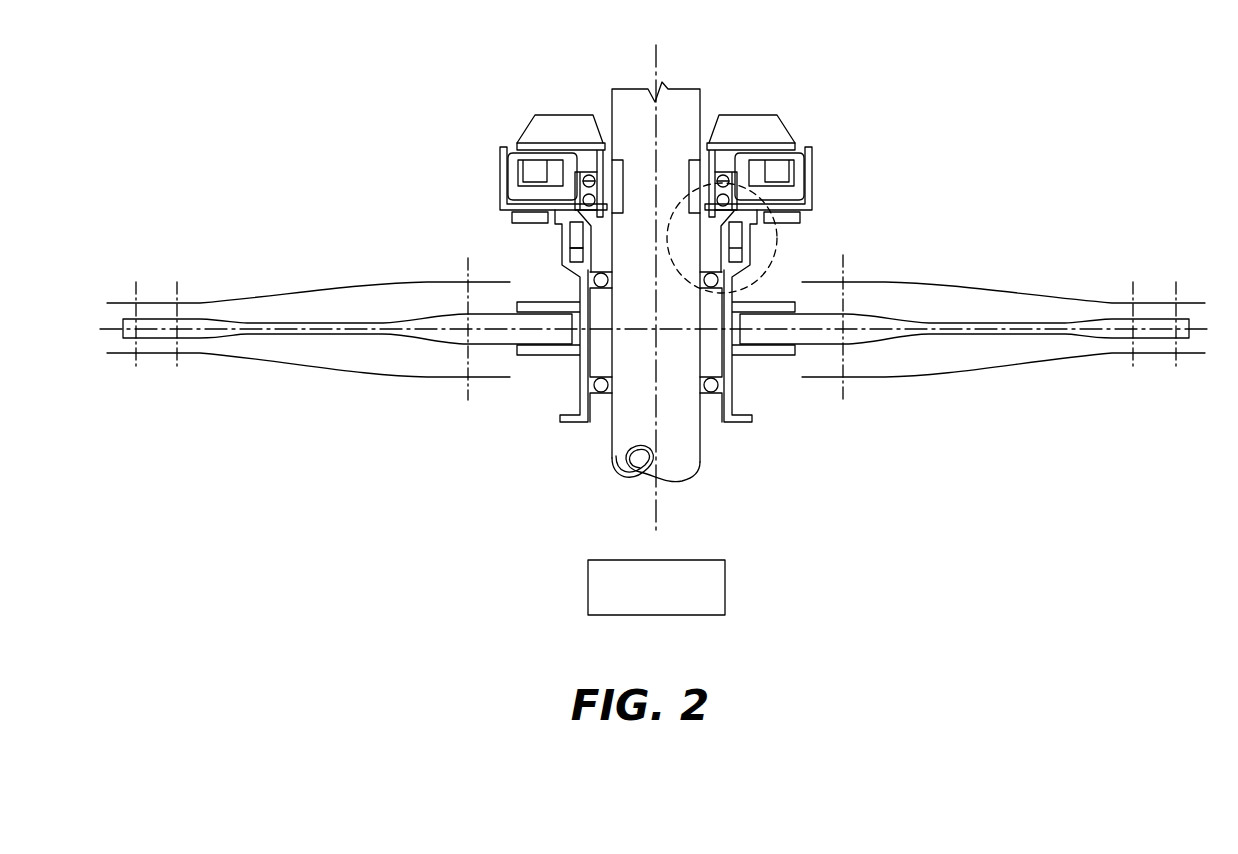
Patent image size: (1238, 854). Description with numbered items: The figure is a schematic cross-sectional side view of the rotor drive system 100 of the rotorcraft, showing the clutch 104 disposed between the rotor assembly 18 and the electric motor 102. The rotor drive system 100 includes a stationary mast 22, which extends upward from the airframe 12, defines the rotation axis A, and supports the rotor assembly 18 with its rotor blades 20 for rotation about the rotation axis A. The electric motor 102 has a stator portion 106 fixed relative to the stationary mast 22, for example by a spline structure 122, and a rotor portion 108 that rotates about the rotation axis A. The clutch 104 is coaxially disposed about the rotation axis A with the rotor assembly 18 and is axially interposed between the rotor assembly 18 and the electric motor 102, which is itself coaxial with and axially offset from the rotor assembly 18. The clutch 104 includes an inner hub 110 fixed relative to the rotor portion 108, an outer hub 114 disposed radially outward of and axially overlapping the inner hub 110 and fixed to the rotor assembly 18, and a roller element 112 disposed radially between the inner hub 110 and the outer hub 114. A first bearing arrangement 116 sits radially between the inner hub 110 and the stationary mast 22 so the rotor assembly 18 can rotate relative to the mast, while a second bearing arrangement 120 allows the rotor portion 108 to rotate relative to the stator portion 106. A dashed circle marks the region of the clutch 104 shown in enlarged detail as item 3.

The rotor drive system 100 is at (366, 556).
The rotation axis A is at (664, 48).
The stationary mast 22 is at (677, 440).
The spline structure 122 is at (618, 177).
The stator portion 106 is at (602, 152).
The rotor portion 108 is at (500, 207).
The second bearing arrangement 120 is at (588, 176).
The outer hub 114 is at (555, 237).
The roller element 112 is at (578, 263).
The inner hub 110 is at (603, 229).
The first bearing arrangement 116 is at (601, 394).
The electric motor 102 is at (798, 242).
The clutch 104 is at (813, 209).
The detail area of FIG. 3 is at (774, 268).
The rotor assembly 18 is at (858, 270).
The rotor blade 20 is at (1000, 312).
The airframe 12 is at (656, 587).